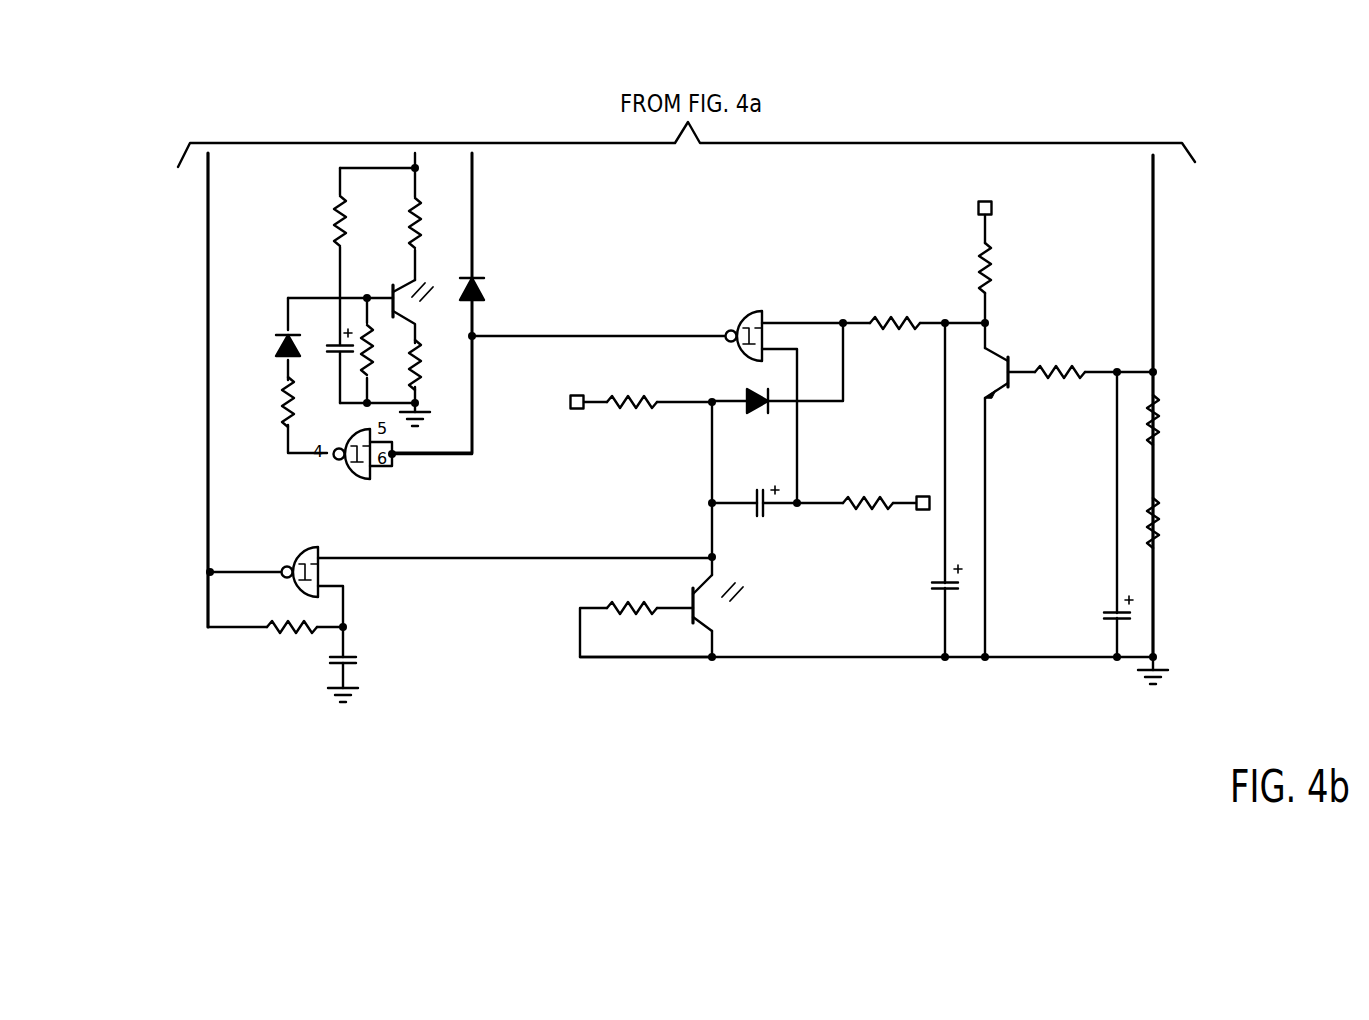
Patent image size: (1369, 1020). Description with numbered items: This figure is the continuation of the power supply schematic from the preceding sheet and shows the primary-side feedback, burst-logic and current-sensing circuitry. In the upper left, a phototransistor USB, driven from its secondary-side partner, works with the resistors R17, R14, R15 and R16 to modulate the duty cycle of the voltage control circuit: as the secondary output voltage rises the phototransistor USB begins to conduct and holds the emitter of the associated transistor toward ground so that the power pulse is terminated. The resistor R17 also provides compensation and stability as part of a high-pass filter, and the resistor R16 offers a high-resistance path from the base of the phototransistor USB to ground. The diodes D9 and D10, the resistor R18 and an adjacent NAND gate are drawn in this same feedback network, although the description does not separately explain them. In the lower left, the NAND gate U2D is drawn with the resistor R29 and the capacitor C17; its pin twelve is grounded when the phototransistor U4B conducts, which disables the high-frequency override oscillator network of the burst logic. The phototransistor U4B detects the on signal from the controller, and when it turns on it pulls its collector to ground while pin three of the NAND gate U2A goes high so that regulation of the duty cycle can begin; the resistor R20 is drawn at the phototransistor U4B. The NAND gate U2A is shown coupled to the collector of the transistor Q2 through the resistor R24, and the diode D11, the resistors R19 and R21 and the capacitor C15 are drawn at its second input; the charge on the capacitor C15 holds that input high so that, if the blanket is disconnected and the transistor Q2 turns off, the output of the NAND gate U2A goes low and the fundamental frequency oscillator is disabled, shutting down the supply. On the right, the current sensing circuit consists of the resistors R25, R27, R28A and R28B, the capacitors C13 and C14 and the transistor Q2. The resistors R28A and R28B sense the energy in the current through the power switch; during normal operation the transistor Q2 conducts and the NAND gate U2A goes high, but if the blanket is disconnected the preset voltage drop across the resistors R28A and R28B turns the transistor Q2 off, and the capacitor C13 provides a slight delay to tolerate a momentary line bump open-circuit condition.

The resistor R14 is at (420, 196).
The resistor R15 is at (420, 372).
The resistor R16 is at (379, 370).
The resistor R17 is at (292, 217).
The resistor 100K 1/4W R18 is at (283, 423).
The resistor 10K 1/4W R19 is at (624, 413).
The resistor 2M 1/4W R20 is at (618, 618).
The resistor 100K 1/4W R21 is at (870, 505).
The resistor 100K 1/4W R24 is at (882, 308).
The resistor R25 is at (1057, 272).
The resistor R27 is at (1086, 359).
The resistor R28A is at (1222, 420).
The resistor R28B is at (1222, 523).
The resistor 10K 1/4W R29 is at (256, 641).
The capacitor C13 is at (895, 490).
The capacitor C14 is at (1062, 514).
The capacitor C15 is at (762, 515).
The capacitor .001/50 C17 is at (400, 664).
The diode 1N4148 D9 is at (278, 340).
The diode 1N4148 D10 is at (523, 290).
The diode 1N4148 D11 is at (743, 388).
The transistor Q2 is at (1036, 383).
The NAND gate U2A is at (719, 322).
The NAND gate U2D is at (461, 572).
The phototransistor U4B is at (724, 613).
The phototransistor USB is at (416, 304).